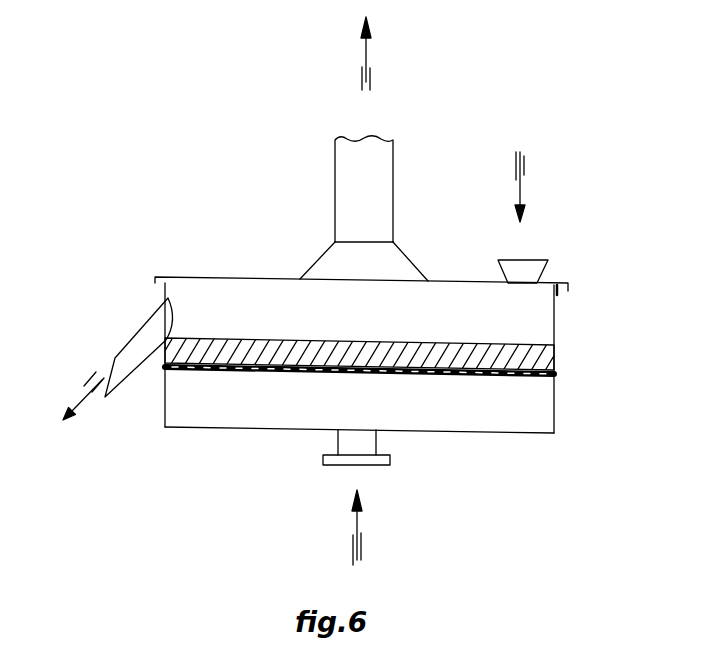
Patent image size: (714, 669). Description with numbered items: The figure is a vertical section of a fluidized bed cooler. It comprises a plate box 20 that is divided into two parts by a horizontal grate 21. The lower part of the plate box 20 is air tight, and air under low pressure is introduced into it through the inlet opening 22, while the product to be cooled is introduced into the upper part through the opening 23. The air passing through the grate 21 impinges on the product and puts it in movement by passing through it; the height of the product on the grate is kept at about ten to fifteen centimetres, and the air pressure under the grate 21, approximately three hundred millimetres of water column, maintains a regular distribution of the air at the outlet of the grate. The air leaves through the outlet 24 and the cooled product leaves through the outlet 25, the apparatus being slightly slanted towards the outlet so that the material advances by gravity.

The plate box 20 is at (558, 408).
The horizontal grate 21 is at (237, 372).
The inlet opening 22 is at (338, 467).
The opening 23 is at (541, 258).
The air outlet 24 is at (396, 180).
The cooled product outlet 25 is at (130, 340).